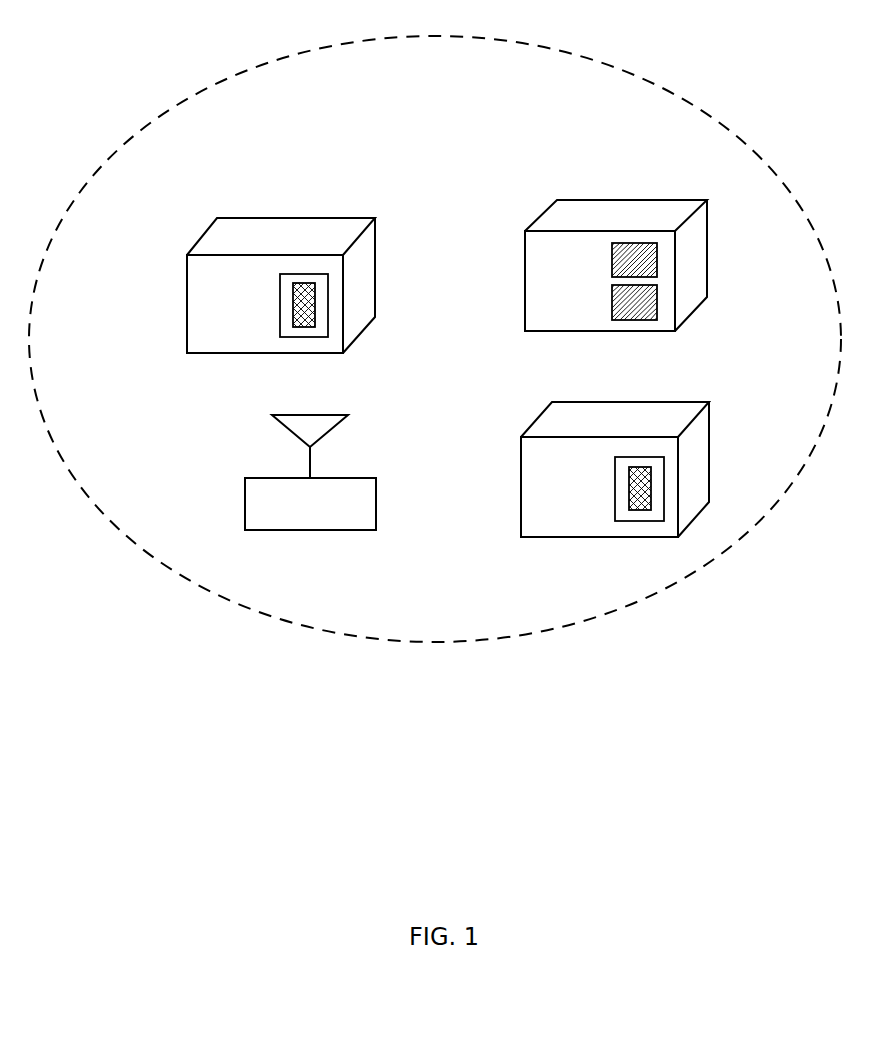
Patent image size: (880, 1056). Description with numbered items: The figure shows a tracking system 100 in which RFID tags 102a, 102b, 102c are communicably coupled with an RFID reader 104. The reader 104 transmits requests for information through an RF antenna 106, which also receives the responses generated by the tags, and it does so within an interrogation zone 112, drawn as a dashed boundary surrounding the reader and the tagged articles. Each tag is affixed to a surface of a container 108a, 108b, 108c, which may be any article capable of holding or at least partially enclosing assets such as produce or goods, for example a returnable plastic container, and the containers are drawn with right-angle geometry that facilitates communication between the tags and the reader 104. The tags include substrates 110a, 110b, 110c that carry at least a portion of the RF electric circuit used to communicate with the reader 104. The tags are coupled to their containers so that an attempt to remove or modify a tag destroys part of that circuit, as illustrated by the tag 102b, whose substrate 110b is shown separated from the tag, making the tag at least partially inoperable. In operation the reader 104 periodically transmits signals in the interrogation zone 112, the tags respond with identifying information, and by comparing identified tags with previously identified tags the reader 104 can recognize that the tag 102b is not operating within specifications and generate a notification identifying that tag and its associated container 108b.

The tracking system 100 is at (691, 82).
The interrogation zone 112 is at (62, 453).
The RFID reader 104 is at (344, 474).
The RF antenna 106 is at (337, 412).
The container 108a is at (298, 211).
The container 108b is at (638, 194).
The container 108c is at (628, 394).
The substrate 110a is at (282, 283).
The substrate 110b is at (612, 258).
The substrate 110c is at (617, 466).
The RFID tag 102a is at (280, 320).
The RFID tag 102b is at (612, 304).
The RFID tag 102c is at (615, 505).